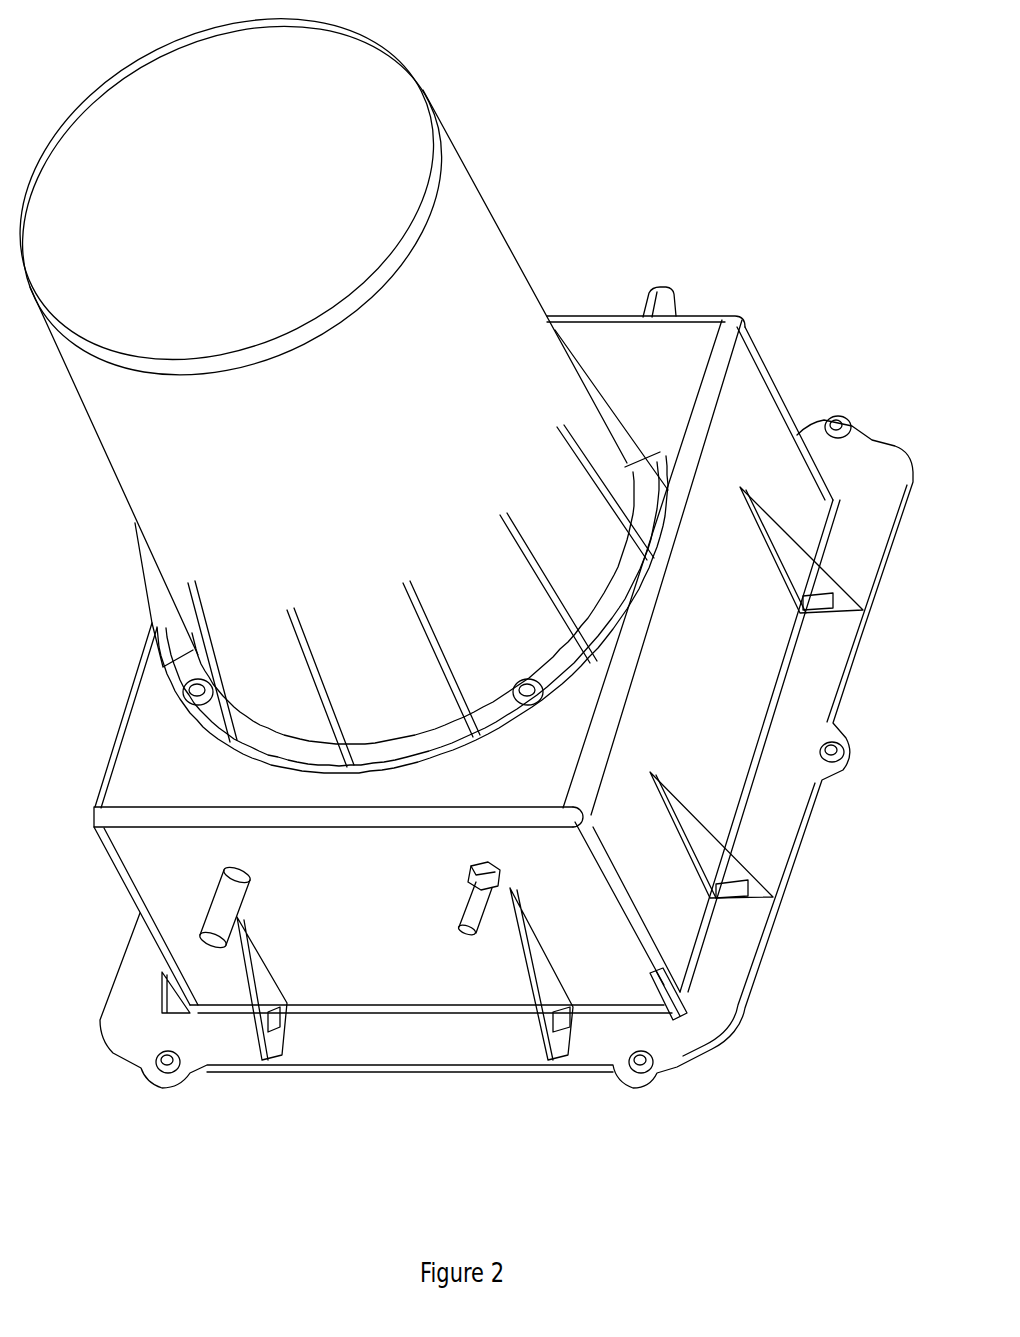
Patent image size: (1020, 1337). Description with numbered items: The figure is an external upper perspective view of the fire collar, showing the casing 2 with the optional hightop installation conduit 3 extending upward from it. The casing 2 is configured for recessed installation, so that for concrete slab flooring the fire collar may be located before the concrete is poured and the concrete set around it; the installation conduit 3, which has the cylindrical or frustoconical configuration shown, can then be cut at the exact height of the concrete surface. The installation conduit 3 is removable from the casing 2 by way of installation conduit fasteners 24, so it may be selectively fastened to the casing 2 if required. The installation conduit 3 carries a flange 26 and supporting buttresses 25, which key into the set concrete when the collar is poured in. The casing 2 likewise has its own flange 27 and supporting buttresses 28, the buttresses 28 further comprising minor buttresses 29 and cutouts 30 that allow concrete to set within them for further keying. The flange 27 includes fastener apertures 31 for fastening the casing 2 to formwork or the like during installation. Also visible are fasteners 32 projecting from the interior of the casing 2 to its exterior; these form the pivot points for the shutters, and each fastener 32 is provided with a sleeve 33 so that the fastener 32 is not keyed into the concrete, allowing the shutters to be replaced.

The casing 2 is at (704, 317).
The installation conduit 3 is at (487, 195).
The installation conduit fasteners 24 is at (209, 682).
The buttresses 25 is at (329, 690).
The flange 26 is at (402, 746).
The flange 27 is at (878, 461).
The supporting buttresses 28 is at (683, 798).
The minor buttresses 29 is at (665, 985).
The cutouts 30 is at (740, 882).
The fastener apertures 31 is at (649, 1071).
The fasteners 32 is at (470, 904).
The sleeve 33 is at (225, 912).